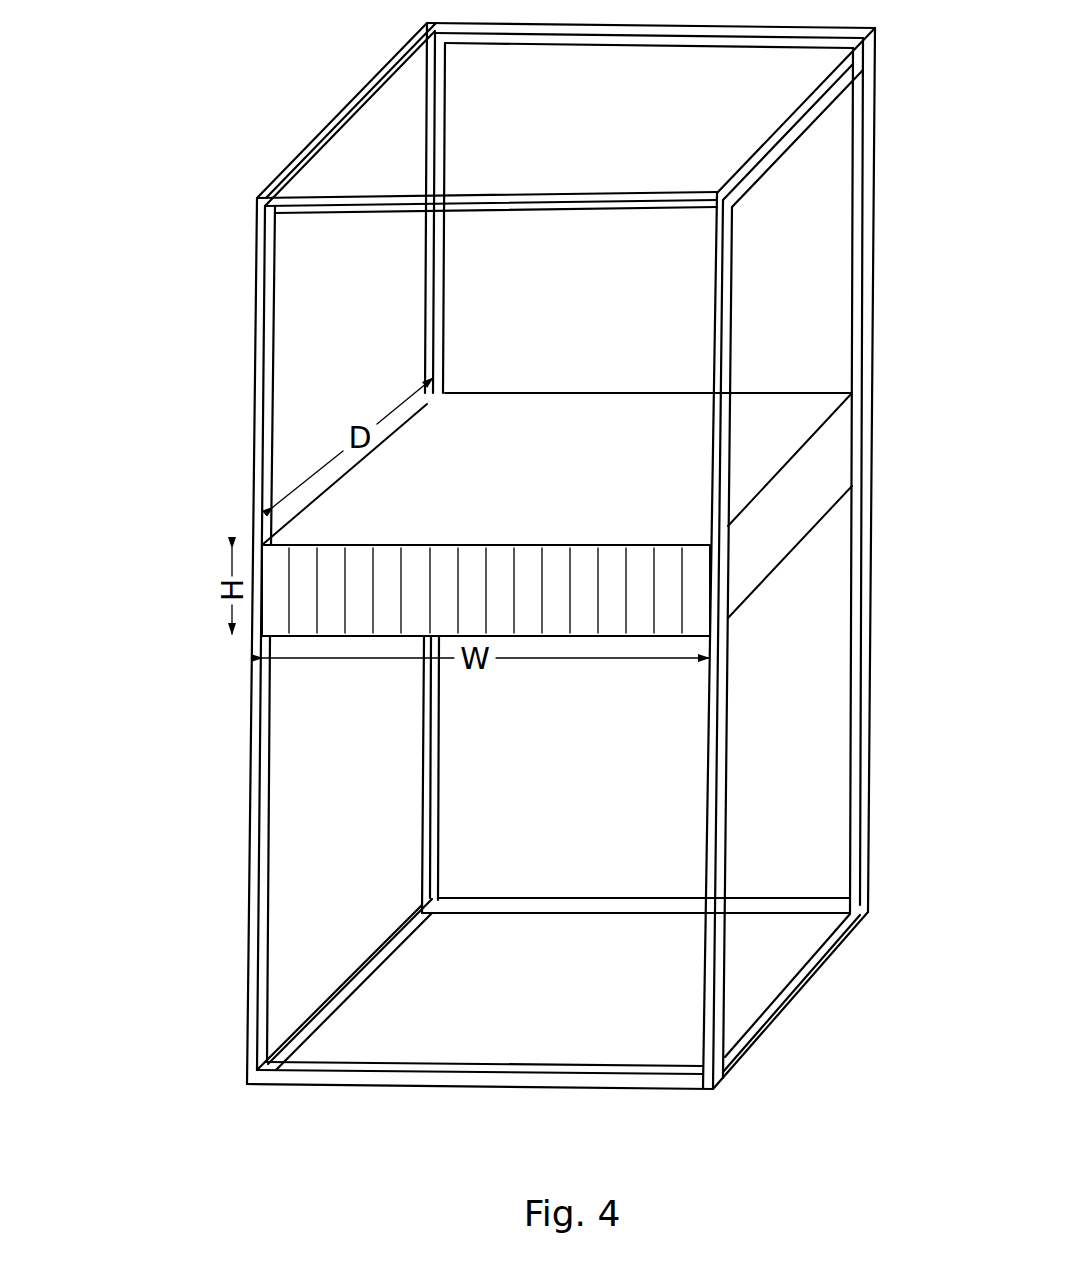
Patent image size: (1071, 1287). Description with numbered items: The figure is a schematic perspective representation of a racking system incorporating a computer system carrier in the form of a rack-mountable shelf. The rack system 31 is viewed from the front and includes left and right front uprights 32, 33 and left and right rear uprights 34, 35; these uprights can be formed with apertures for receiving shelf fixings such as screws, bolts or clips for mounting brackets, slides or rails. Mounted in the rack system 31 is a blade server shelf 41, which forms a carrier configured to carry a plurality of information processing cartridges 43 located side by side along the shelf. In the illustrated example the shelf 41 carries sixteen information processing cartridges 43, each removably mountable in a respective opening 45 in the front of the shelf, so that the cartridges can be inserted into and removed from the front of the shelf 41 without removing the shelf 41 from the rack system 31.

The rack system 31 is at (152, 984).
The left front upright 32 is at (247, 908).
The right front upright 33 is at (728, 815).
The left rear upright 34 is at (442, 813).
The right rear upright 35 is at (873, 838).
The blade server shelf 41 is at (606, 561).
The information processing cartridges 43 is at (302, 636).
The opening 45 is at (635, 637).